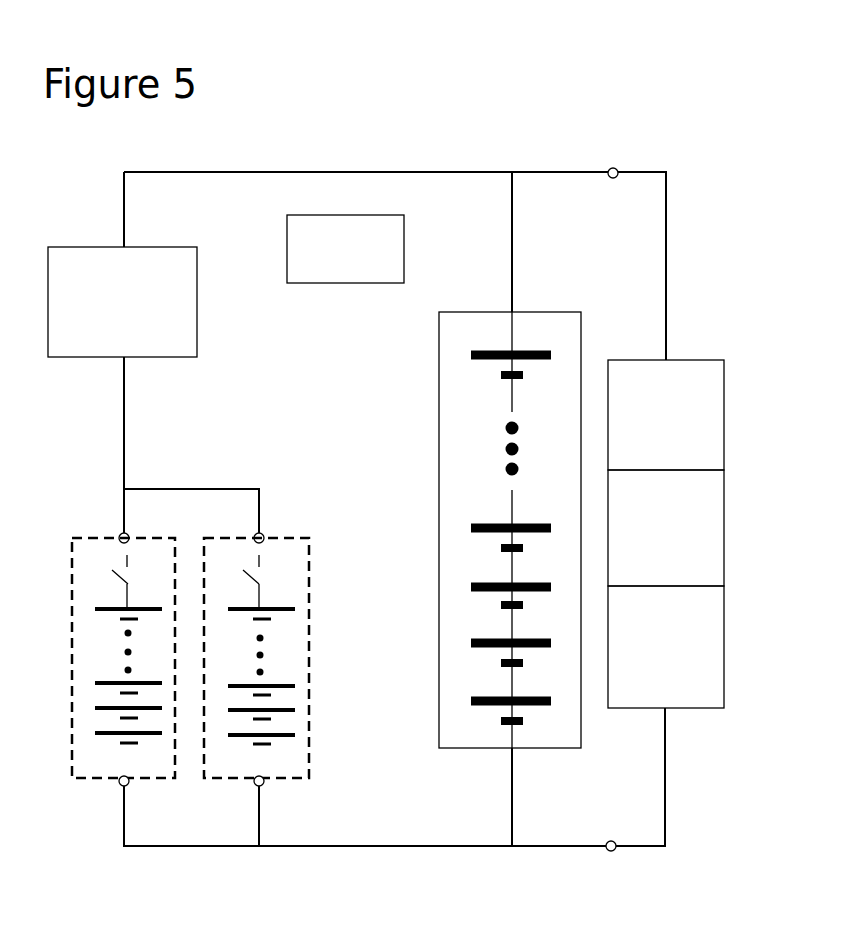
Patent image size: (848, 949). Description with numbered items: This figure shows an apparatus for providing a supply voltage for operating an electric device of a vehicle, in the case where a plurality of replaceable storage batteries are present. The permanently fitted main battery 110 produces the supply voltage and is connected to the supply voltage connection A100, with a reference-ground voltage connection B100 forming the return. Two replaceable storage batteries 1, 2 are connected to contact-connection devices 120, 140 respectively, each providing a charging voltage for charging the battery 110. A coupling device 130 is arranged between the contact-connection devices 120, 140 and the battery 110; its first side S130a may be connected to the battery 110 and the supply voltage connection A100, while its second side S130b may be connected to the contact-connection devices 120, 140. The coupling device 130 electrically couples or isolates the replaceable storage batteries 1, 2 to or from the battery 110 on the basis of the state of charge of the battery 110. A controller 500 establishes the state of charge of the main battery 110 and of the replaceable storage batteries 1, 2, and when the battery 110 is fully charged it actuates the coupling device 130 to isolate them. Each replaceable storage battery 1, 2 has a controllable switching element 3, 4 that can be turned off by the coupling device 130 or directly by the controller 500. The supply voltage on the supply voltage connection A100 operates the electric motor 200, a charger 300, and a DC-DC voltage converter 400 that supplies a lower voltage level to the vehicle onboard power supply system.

The replaceable storage battery 1 is at (71, 557).
The further replaceable storage battery 2 is at (295, 533).
The controllable switching element 3 is at (131, 572).
The controllable switching element 4 is at (265, 584).
The battery 110 is at (541, 301).
The contact-connection device 120 is at (118, 533).
The coupling device 130 is at (210, 326).
The contact-connection device 140 is at (261, 532).
The electric motor 200 is at (666, 415).
The charger 300 is at (666, 528).
The DC-DC voltage converter 400 is at (666, 647).
The controller 500 is at (410, 249).
The supply voltage connection A100 is at (613, 167).
The reference-ground voltage connection B100 is at (612, 853).
The first side of the coupling device S130a is at (135, 237).
The second side of the coupling device S130b is at (130, 376).